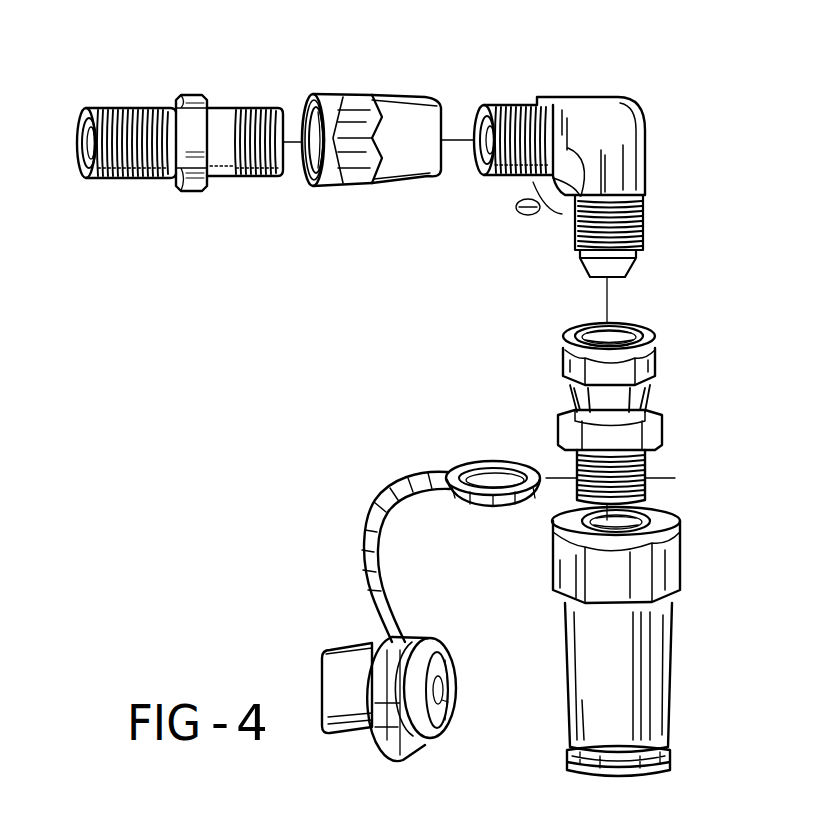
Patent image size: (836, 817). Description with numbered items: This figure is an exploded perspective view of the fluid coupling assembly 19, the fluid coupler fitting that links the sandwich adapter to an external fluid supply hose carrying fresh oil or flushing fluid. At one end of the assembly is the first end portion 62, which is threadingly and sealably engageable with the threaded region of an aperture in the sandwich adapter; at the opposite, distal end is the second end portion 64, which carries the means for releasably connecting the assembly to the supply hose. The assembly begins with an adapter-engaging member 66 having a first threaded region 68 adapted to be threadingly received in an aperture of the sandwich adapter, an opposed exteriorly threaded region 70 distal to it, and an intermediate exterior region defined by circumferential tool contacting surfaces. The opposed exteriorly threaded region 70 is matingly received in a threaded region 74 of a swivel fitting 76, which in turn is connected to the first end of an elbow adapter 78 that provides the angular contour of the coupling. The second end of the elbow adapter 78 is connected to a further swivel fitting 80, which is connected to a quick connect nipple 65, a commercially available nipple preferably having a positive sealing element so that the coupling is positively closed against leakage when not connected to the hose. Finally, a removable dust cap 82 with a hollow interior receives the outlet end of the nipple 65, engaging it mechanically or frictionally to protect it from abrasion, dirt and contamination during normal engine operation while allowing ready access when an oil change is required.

The fluid coupling assembly 19 is at (262, 294).
The first end portion 62 is at (86, 108).
The second end portion 64 is at (647, 775).
The quick connect nipple 65 is at (682, 650).
The adapter-engaging member 66 is at (185, 100).
The first threaded region 68 is at (148, 181).
The opposed exteriorly threaded region 70 is at (252, 108).
The threaded region 74 is at (312, 185).
The swivel fitting 76 is at (415, 102).
The elbow adapter 78 is at (610, 103).
The swivel fitting 80 is at (563, 356).
The dust cap 82 is at (338, 646).